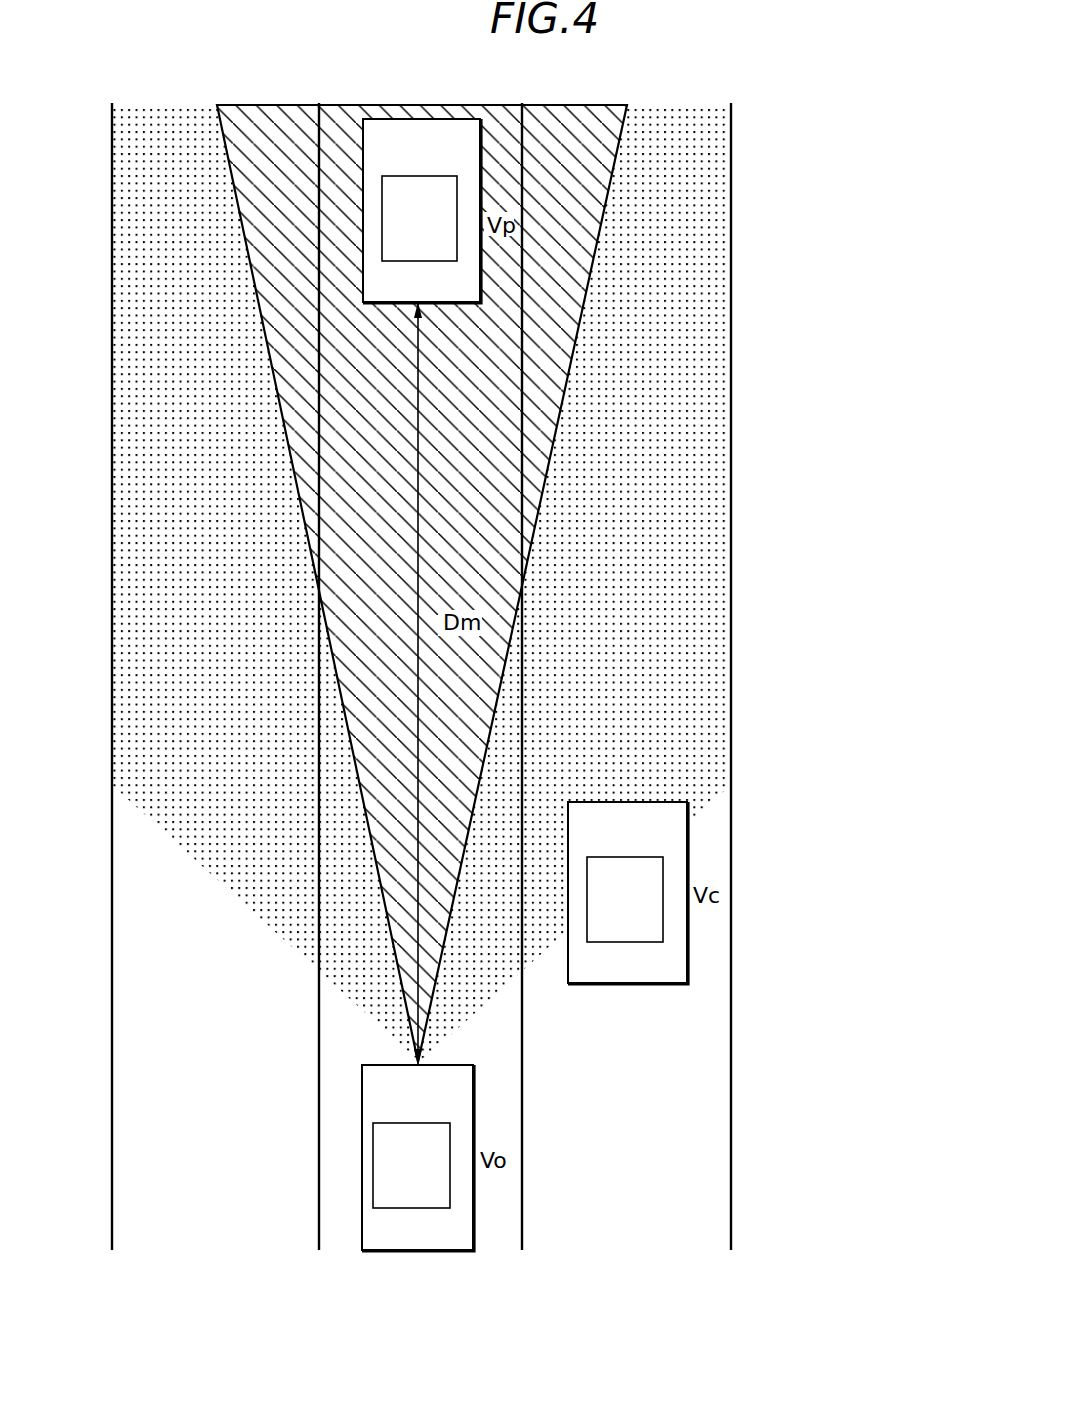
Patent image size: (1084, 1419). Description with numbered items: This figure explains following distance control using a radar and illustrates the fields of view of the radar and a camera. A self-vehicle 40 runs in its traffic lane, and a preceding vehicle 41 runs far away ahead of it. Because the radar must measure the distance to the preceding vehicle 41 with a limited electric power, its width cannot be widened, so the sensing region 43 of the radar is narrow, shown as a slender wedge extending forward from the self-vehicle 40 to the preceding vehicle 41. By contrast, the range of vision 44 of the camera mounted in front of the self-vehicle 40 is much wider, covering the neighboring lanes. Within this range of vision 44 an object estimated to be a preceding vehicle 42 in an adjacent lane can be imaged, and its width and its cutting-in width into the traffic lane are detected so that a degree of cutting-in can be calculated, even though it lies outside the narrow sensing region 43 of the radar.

The self-vehicle 40 is at (420, 1240).
The preceding vehicle 41 is at (423, 116).
The preceding vehicle 42 is at (632, 973).
The sensing region 43 is at (477, 375).
The range of vision 44 is at (657, 740).